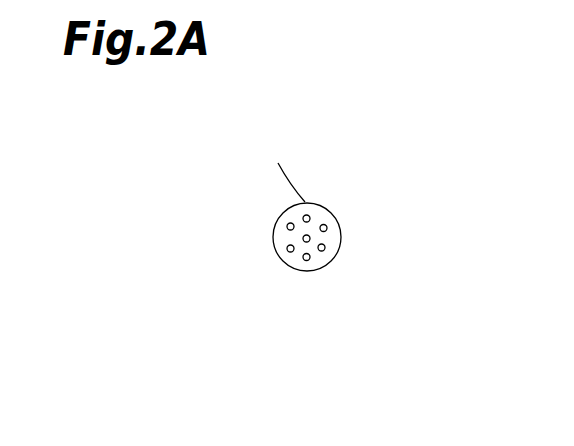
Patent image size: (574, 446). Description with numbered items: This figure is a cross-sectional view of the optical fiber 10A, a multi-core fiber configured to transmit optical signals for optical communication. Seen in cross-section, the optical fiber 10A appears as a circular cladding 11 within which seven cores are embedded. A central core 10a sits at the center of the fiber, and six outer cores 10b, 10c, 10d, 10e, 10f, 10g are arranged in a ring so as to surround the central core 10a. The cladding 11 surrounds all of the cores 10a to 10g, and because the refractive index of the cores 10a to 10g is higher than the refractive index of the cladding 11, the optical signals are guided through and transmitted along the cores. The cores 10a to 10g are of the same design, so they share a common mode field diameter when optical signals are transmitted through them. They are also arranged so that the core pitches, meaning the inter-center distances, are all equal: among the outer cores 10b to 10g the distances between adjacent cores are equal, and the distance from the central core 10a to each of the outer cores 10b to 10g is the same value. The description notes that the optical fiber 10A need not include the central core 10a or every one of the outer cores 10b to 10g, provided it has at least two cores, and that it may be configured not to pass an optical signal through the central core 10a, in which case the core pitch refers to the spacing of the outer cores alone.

The cladding 11 is at (293, 212).
The optical fiber 10A is at (281, 170).
The central core 10a is at (306, 238).
The outer core 10b is at (306, 218).
The outer core 10c is at (324, 228).
The outer core 10d is at (322, 248).
The outer core 10e is at (306, 257).
The outer core 10f is at (290, 248).
The outer core 10g is at (290, 226).